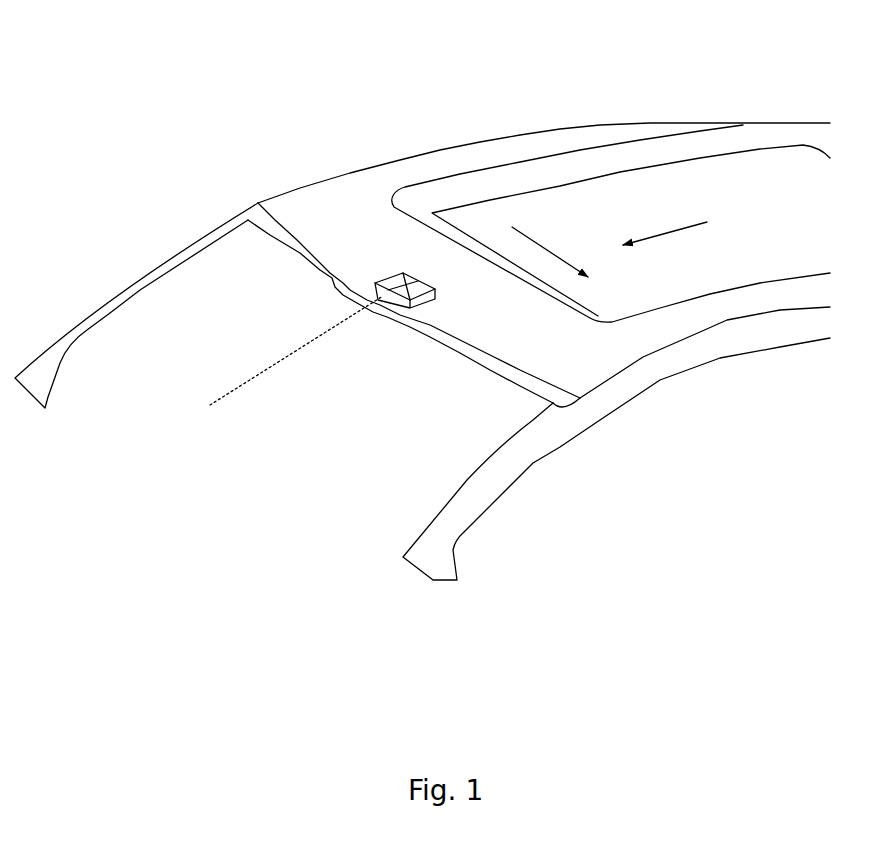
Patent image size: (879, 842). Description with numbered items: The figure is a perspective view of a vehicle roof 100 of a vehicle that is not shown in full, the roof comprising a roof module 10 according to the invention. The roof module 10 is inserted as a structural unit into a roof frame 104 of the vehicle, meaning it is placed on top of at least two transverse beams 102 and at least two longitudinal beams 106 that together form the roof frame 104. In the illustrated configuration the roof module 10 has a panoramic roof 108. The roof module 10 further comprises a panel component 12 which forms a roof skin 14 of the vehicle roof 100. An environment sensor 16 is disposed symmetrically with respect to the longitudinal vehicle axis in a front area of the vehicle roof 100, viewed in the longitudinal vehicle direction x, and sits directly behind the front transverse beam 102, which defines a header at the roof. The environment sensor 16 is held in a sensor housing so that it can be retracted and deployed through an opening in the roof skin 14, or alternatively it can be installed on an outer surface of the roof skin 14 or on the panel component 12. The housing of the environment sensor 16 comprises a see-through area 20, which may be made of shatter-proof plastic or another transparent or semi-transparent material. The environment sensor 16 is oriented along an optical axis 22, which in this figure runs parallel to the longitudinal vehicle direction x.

The vehicle roof 100 is at (228, 170).
The roof module 10 is at (353, 192).
The panel component 12 is at (490, 153).
The roof skin 14 is at (440, 162).
The environment sensor 16 is at (405, 306).
The see-through area 20 is at (397, 298).
The optical axis 22 is at (302, 355).
The transverse beam 102 is at (293, 253).
The roof frame 104 is at (668, 373).
The longitudinal beam 106 is at (788, 330).
The panoramic roof 108 is at (602, 197).